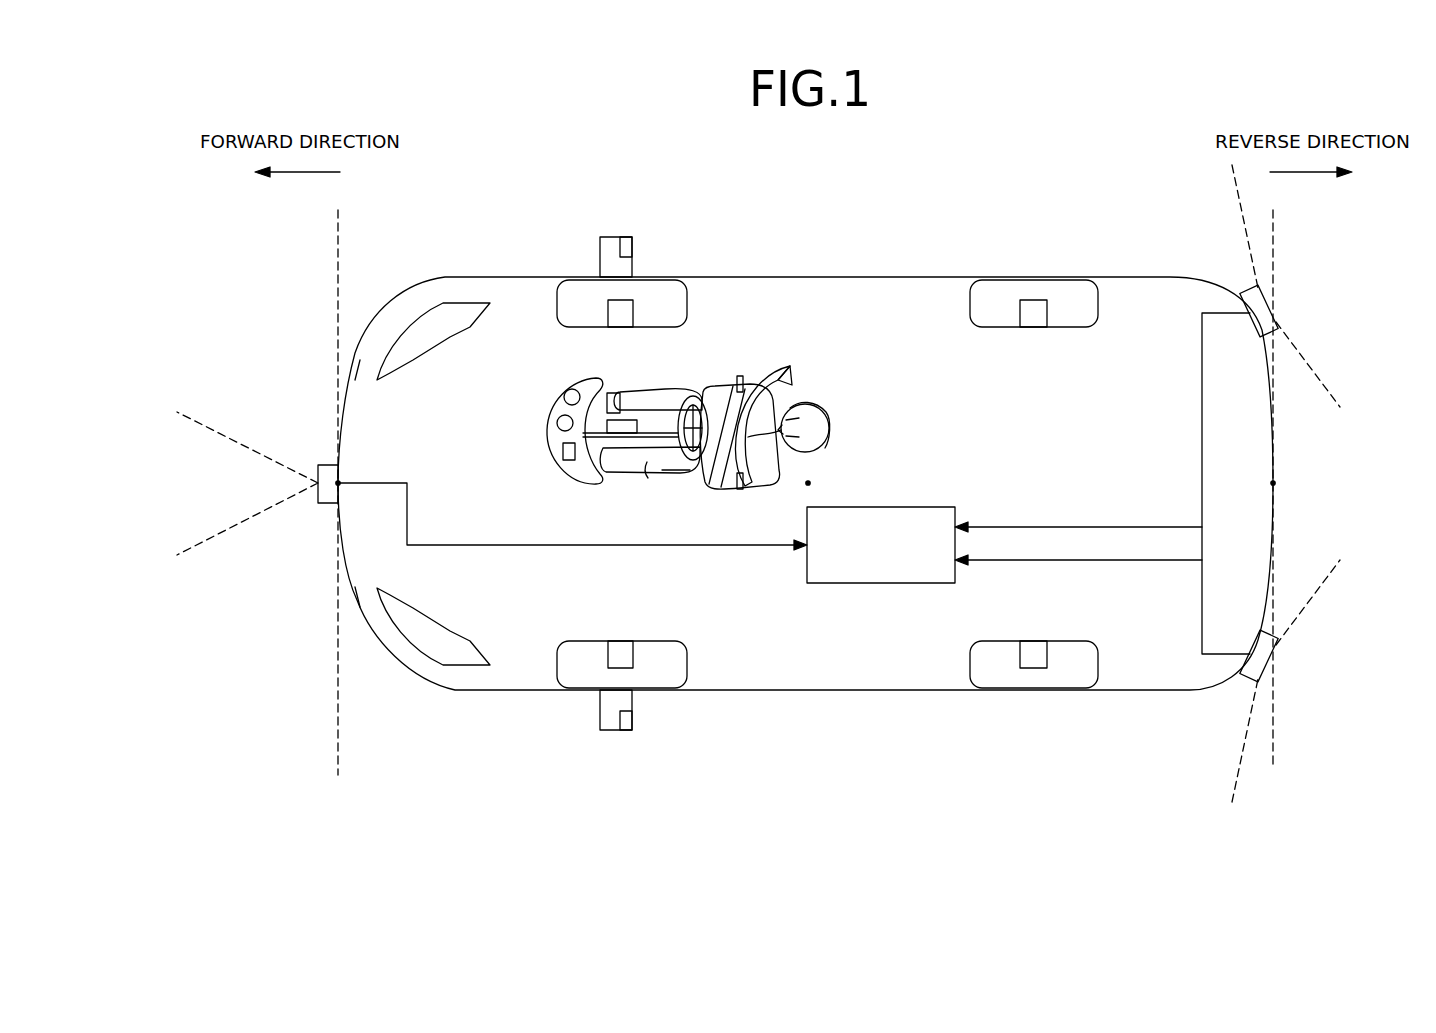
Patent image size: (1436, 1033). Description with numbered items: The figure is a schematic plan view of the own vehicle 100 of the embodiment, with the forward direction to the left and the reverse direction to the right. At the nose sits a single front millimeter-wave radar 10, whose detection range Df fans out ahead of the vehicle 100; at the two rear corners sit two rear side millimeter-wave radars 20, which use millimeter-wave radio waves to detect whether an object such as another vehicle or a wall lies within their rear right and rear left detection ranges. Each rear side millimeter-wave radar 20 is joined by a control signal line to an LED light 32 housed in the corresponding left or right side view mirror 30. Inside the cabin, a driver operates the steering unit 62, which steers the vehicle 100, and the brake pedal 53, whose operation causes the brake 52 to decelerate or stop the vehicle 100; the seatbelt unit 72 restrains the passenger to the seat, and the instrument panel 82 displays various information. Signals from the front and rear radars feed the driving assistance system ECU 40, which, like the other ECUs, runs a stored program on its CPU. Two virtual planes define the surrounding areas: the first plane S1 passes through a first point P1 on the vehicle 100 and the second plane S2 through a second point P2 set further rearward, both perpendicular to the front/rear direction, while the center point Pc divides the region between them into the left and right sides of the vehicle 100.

The vehicle 100 is at (1029, 210).
The front millimeter-wave radar 10 is at (327, 463).
The rear side millimeter-wave radar 20 is at (1257, 296).
The side view mirror 30 is at (607, 245).
The LED light 32 is at (628, 246).
The driving assistance system ECU 40 is at (904, 508).
The brake 52 is at (620, 303).
The brake pedal 53 is at (620, 428).
The steering unit 62 is at (676, 465).
The seatbelt unit 72 is at (778, 373).
The instrument panel 82 is at (578, 377).
The first point P1 is at (340, 478).
The second point P2 is at (1275, 478).
The center point Pc is at (812, 480).
The first plane S1 is at (340, 245).
The second plane S2 is at (1275, 265).
The detection range Df is at (250, 502).